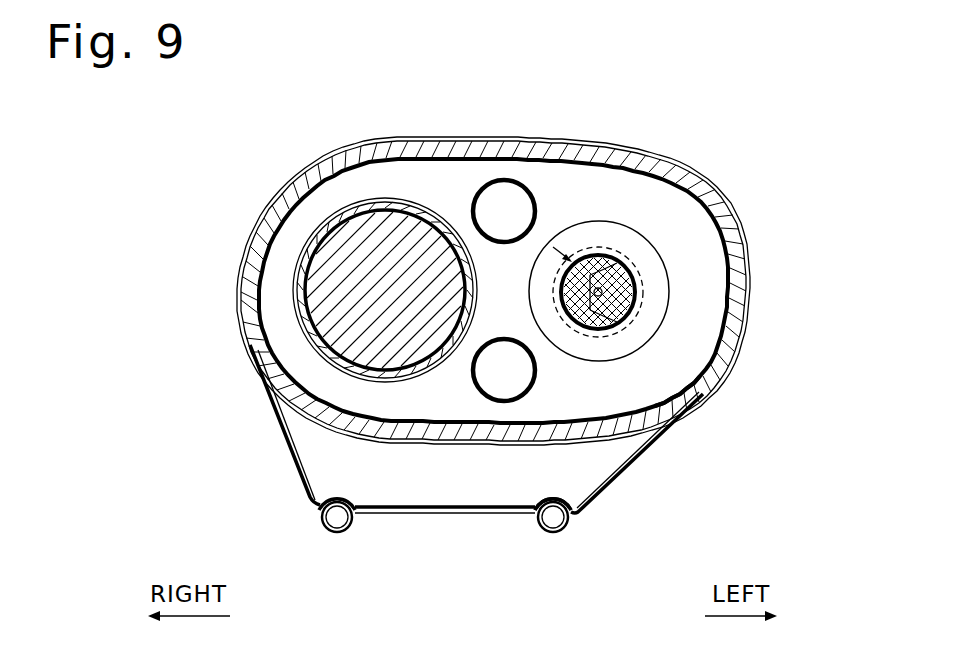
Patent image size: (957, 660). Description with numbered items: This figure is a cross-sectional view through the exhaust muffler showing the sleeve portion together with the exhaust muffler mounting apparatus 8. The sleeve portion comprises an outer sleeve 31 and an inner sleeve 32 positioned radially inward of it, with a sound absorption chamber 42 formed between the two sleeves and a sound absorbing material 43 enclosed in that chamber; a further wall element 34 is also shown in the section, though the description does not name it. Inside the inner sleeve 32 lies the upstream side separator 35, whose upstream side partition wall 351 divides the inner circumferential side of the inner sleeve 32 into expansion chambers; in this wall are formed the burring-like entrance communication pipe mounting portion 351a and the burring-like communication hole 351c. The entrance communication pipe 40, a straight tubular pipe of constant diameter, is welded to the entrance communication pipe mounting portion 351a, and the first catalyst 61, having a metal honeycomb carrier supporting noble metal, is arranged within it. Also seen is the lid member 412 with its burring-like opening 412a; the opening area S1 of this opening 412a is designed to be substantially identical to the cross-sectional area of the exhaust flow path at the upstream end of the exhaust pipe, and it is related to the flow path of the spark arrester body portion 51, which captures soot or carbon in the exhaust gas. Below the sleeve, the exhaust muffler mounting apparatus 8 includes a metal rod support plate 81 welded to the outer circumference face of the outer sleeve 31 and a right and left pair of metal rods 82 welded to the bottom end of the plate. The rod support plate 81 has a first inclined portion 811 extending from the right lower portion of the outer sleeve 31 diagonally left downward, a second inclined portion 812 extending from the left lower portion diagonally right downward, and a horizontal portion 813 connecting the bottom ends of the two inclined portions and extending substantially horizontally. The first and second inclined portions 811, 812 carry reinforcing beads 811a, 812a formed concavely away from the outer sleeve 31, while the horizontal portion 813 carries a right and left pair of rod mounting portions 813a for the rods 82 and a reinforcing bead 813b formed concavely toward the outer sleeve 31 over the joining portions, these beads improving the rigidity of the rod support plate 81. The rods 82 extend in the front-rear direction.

The exhaust muffler mounting apparatus 8 is at (220, 441).
The outer sleeve 31 is at (427, 146).
The inner sleeve 32 is at (445, 172).
The inner wall 34 is at (480, 142).
The upstream side separator 35 is at (277, 302).
The entrance communication pipe 40 is at (296, 276).
The sound absorption chamber 42 is at (685, 170).
The sound absorbing material 43 is at (717, 218).
The spark arrester body portion 51 is at (633, 262).
The first catalyst 61 is at (259, 366).
The rod support plate 81 is at (657, 447).
The rods 82 is at (340, 532).
The upstream side partition wall 351 is at (530, 186).
The entrance communication pipe mounting portion 351a is at (345, 212).
The communication hole 351c is at (391, 184).
The lid member 412 is at (632, 262).
The opening 412a is at (637, 291).
The first inclined portion 811 is at (278, 443).
The reinforcing bead 811a is at (286, 473).
The second inclined portion 812 is at (627, 484).
The reinforcing bead 812a is at (597, 506).
The horizontal portion 813 is at (443, 515).
The rod mounting portions 813a is at (343, 498).
The reinforcing bead 813b is at (437, 504).
The opening area S1 is at (627, 320).